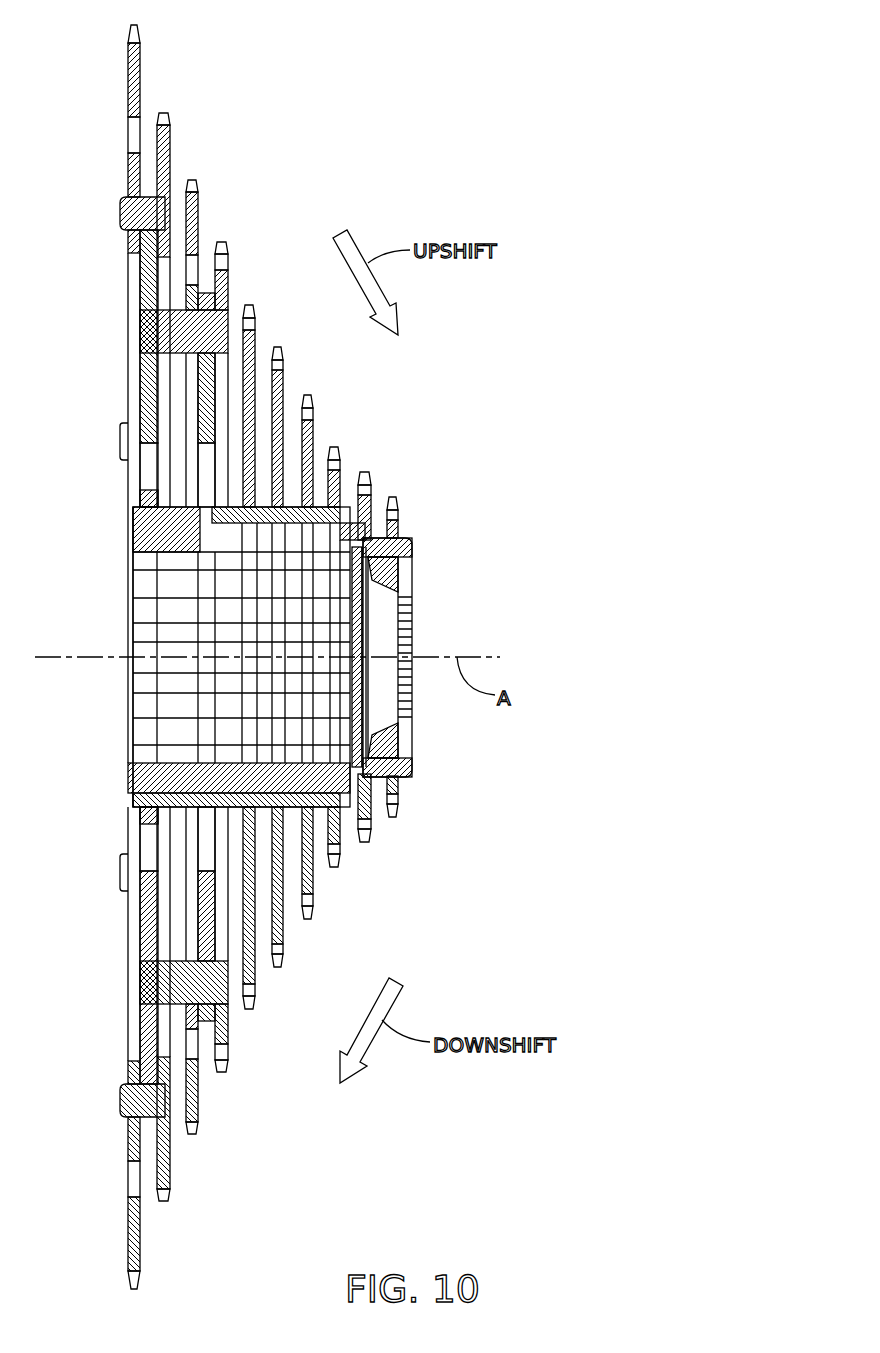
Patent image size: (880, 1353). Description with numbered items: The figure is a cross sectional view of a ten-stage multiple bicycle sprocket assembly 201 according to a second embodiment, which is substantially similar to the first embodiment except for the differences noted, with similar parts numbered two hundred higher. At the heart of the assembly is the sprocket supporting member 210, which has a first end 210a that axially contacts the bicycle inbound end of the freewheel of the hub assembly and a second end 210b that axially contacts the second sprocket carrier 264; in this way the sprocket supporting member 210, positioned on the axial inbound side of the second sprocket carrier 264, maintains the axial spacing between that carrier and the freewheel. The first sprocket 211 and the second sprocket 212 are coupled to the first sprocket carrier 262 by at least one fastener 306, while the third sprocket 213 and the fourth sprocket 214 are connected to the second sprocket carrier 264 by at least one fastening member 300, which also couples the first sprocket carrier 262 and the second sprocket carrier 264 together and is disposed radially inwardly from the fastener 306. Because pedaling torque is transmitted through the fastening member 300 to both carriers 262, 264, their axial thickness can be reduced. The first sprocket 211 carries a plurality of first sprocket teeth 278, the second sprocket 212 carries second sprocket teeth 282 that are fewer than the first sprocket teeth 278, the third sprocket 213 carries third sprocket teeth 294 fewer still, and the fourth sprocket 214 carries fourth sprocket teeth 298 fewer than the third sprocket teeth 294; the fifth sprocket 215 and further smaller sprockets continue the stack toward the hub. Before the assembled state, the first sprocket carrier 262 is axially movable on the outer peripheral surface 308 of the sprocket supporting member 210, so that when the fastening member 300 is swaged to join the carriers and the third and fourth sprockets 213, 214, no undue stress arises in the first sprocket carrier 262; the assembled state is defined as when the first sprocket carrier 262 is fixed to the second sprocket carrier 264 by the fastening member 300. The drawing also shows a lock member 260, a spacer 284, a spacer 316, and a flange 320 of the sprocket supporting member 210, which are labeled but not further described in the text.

The multiple bicycle sprocket assembly 201 is at (446, 419).
The sprocket supporting member 210 is at (201, 613).
The first end 210a is at (198, 533).
The second end 210b is at (130, 525).
The first sprocket 211 is at (138, 654).
The second sprocket 212 is at (203, 633).
The third sprocket 213 is at (236, 638).
The fourth sprocket 214 is at (262, 643).
The fifth sprocket 215 is at (251, 310).
The lock member 260 is at (128, 778).
The first sprocket carrier 262 is at (138, 284).
The second sprocket carrier 264 is at (196, 397).
The first sprocket teeth 278 is at (143, 41).
The second sprocket teeth 282 is at (157, 111).
The spacer between sprockets 284 is at (203, 301).
The third sprocket teeth 294 is at (190, 187).
The fourth sprocket teeth 298 is at (219, 246).
The fastening member 300 is at (140, 330).
The fastener 306 is at (118, 213).
The outer peripheral surface 308 is at (183, 503).
The spacer 316 is at (143, 809).
The support flange of sprocket support body 320 is at (232, 506).